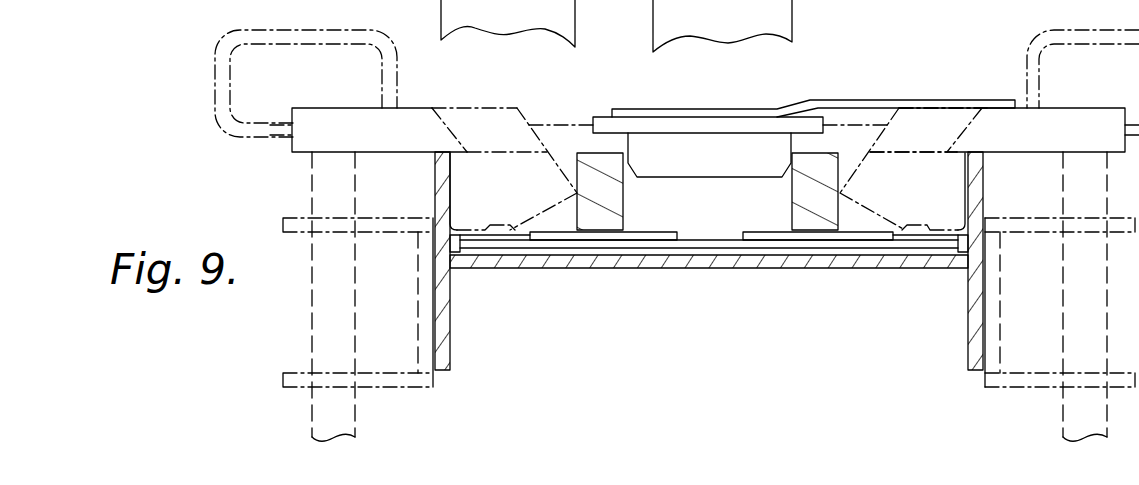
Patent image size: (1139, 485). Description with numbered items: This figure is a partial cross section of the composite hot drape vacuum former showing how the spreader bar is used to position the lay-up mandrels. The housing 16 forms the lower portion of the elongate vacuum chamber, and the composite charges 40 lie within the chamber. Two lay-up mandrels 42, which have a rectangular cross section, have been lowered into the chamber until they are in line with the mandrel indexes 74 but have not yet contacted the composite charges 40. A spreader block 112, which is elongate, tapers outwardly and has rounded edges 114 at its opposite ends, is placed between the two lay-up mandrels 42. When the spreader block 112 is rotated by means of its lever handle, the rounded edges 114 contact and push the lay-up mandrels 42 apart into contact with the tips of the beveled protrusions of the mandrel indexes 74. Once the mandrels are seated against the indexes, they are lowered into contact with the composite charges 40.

The housing 16 is at (643, 262).
The composite charges 40 is at (547, 240).
The lay-up mandrel 42 is at (590, 162).
The mandrel index 74 is at (893, 167).
The spreader block 112 is at (738, 168).
The rounded edges 114 is at (778, 147).